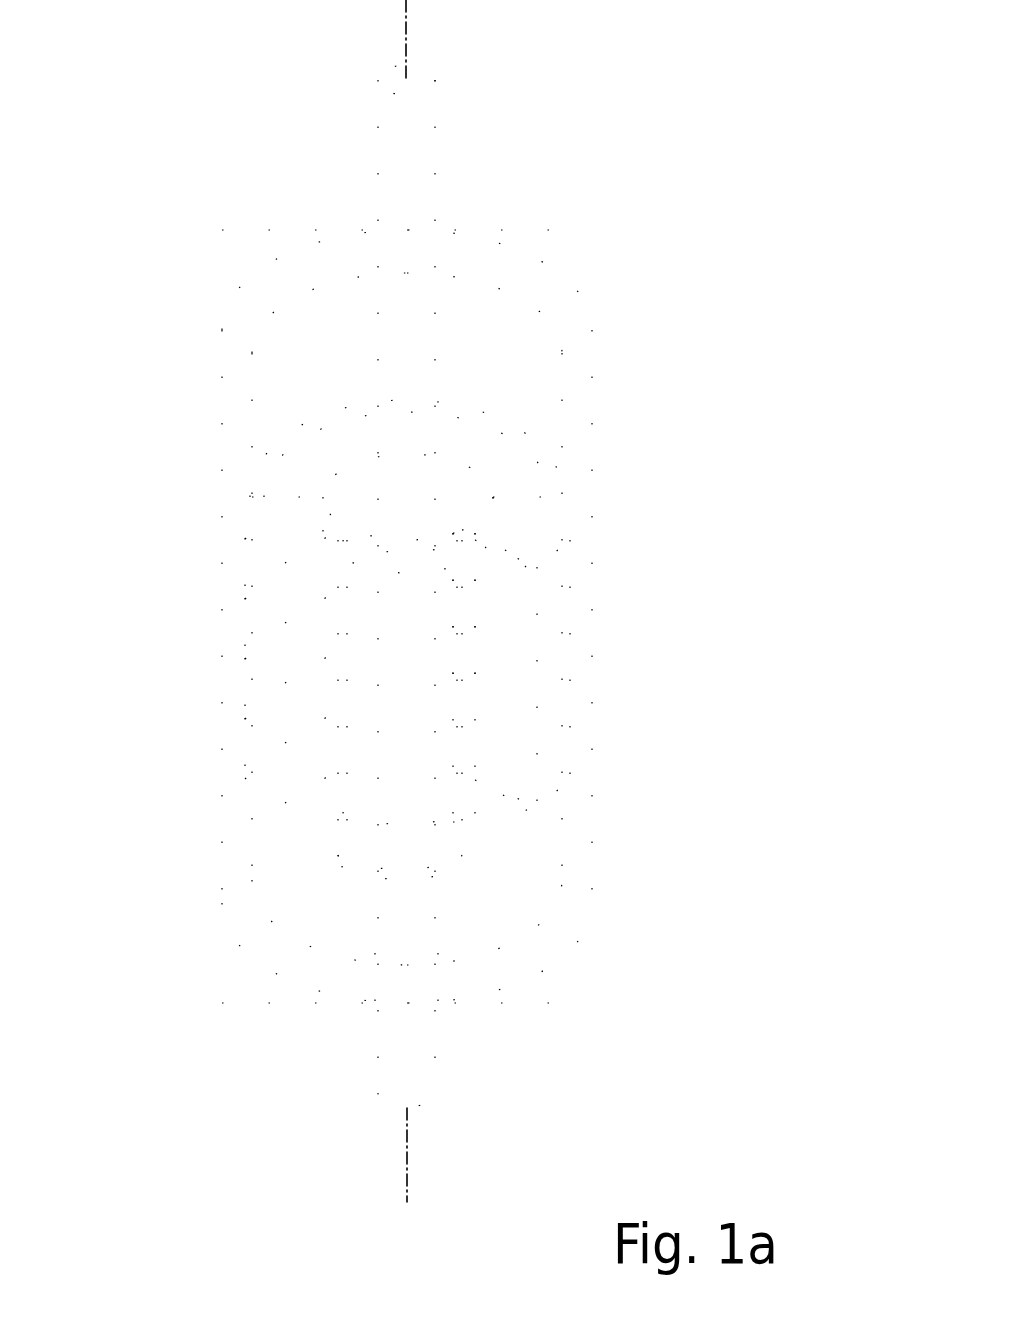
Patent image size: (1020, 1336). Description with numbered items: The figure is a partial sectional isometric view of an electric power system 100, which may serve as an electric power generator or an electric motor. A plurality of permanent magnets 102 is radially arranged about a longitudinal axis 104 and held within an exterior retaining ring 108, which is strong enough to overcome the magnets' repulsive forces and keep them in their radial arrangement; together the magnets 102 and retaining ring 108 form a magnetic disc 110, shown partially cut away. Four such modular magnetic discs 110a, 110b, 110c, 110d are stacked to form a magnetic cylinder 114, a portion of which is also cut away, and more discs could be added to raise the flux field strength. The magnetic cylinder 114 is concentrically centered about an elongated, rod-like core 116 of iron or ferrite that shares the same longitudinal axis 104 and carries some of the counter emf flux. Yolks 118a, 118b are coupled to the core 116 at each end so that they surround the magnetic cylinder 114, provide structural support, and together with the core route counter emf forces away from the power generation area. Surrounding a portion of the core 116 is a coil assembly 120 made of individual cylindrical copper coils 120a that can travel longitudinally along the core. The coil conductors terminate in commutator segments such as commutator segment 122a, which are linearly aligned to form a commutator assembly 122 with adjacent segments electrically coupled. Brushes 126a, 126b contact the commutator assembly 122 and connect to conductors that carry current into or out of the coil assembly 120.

The electric power system 100 is at (192, 1033).
The permanent magnets 102 is at (533, 477).
The longitudinal axis 104 is at (403, 45).
The exterior retaining ring 108 is at (560, 565).
The magnetic disc 110 is at (538, 527).
The magnetic disc 110a is at (262, 580).
The magnetic disc 110b is at (265, 642).
The magnetic disc 110c is at (265, 703).
The magnetic disc 110d is at (263, 765).
The magnetic cylinder 114 is at (553, 698).
The core 116 is at (418, 140).
The yolk 118a is at (300, 278).
The yolk 118b is at (533, 292).
The coil assembly 120 is at (352, 820).
The coil 120a is at (378, 852).
The commutator assembly 122 is at (453, 818).
The commutator segment 122a is at (453, 619).
The brush 126a is at (522, 562).
The brush 126b is at (522, 808).